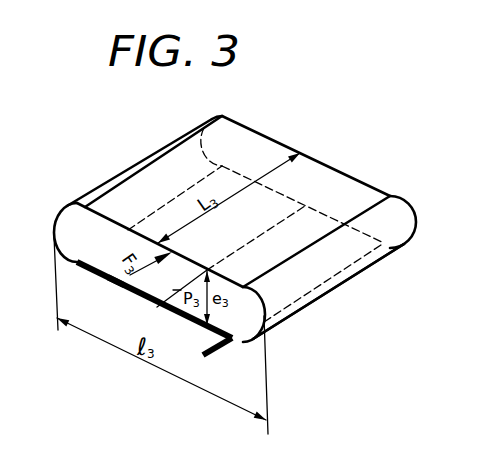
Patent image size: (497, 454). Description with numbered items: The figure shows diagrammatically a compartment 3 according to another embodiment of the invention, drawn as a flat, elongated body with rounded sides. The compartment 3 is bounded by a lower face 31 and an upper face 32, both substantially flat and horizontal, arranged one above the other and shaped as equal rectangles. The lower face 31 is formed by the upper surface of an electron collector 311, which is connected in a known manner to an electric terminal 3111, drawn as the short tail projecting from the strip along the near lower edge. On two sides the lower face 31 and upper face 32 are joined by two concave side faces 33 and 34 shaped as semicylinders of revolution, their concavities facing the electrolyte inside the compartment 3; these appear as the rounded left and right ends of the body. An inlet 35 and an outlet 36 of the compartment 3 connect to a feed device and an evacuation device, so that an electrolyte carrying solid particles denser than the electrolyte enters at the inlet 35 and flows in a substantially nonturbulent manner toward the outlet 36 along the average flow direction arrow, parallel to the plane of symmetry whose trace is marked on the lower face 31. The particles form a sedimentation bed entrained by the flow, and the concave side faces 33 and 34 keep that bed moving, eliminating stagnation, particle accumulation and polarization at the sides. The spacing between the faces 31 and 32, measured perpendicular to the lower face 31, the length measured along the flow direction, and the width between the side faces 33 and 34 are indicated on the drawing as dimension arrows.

The compartment 3 is at (319, 152).
The lower face 31 is at (101, 270).
The electron collector 311 is at (117, 285).
The electric terminal 3111 is at (251, 381).
The upper face 32 is at (267, 266).
The concave side face 33 is at (302, 280).
The concave side face 34 is at (60, 215).
The inlet 35 is at (138, 243).
The outlet 36 is at (357, 207).